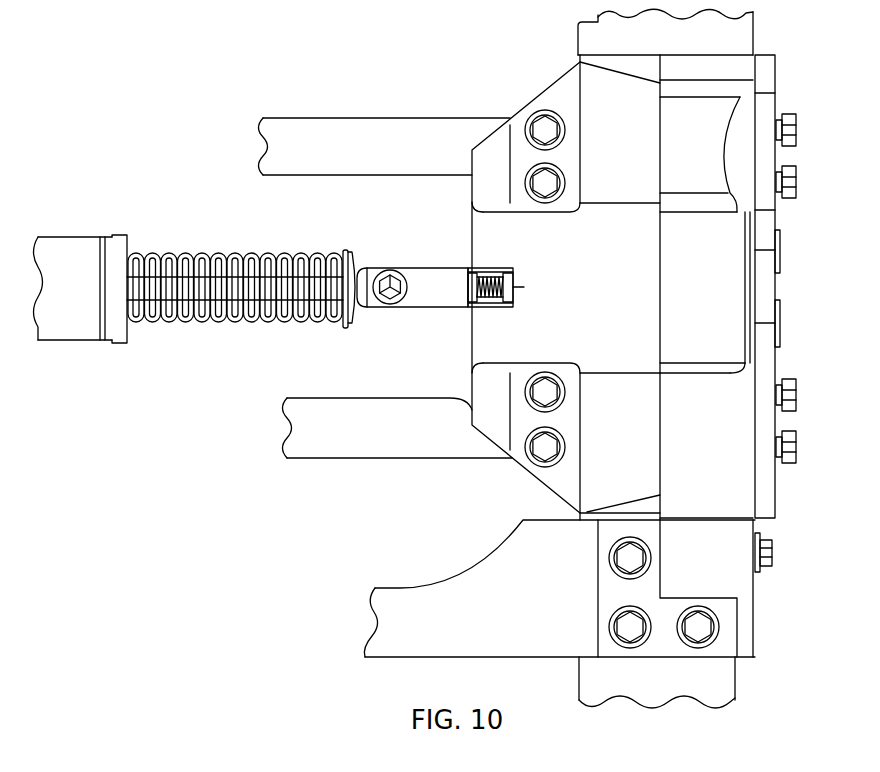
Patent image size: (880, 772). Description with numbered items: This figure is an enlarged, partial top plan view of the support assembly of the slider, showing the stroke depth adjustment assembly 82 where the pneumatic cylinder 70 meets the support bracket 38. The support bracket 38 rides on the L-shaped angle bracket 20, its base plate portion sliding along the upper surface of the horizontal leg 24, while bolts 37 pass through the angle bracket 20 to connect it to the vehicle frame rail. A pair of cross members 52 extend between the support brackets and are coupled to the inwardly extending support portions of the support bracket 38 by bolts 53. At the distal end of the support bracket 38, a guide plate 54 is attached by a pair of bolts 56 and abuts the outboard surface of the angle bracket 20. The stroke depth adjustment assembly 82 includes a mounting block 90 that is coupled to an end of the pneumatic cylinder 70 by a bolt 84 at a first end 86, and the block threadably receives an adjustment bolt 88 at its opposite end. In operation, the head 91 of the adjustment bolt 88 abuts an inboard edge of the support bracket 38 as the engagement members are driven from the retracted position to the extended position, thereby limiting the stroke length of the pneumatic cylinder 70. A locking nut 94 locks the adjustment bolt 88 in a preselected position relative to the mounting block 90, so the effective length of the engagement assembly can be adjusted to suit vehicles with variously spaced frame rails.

The angle bracket 20 is at (735, 673).
The horizontal leg 24 is at (703, 687).
The bolt 37 is at (774, 548).
The support bracket 38 is at (732, 55).
The cross member 52 is at (328, 137).
The bolt 53 is at (538, 180).
The guide plate 54 is at (777, 100).
The bolt 56 is at (796, 130).
The pneumatic cylinder 70 is at (66, 237).
The stroke depth adjustment assembly 82 is at (488, 275).
The bolt 84 is at (388, 270).
The first end 86 is at (360, 300).
The adjustment bolt 88 is at (489, 292).
The mounting block 90 is at (423, 293).
The head 91 is at (514, 286).
The locking nut 94 is at (470, 290).